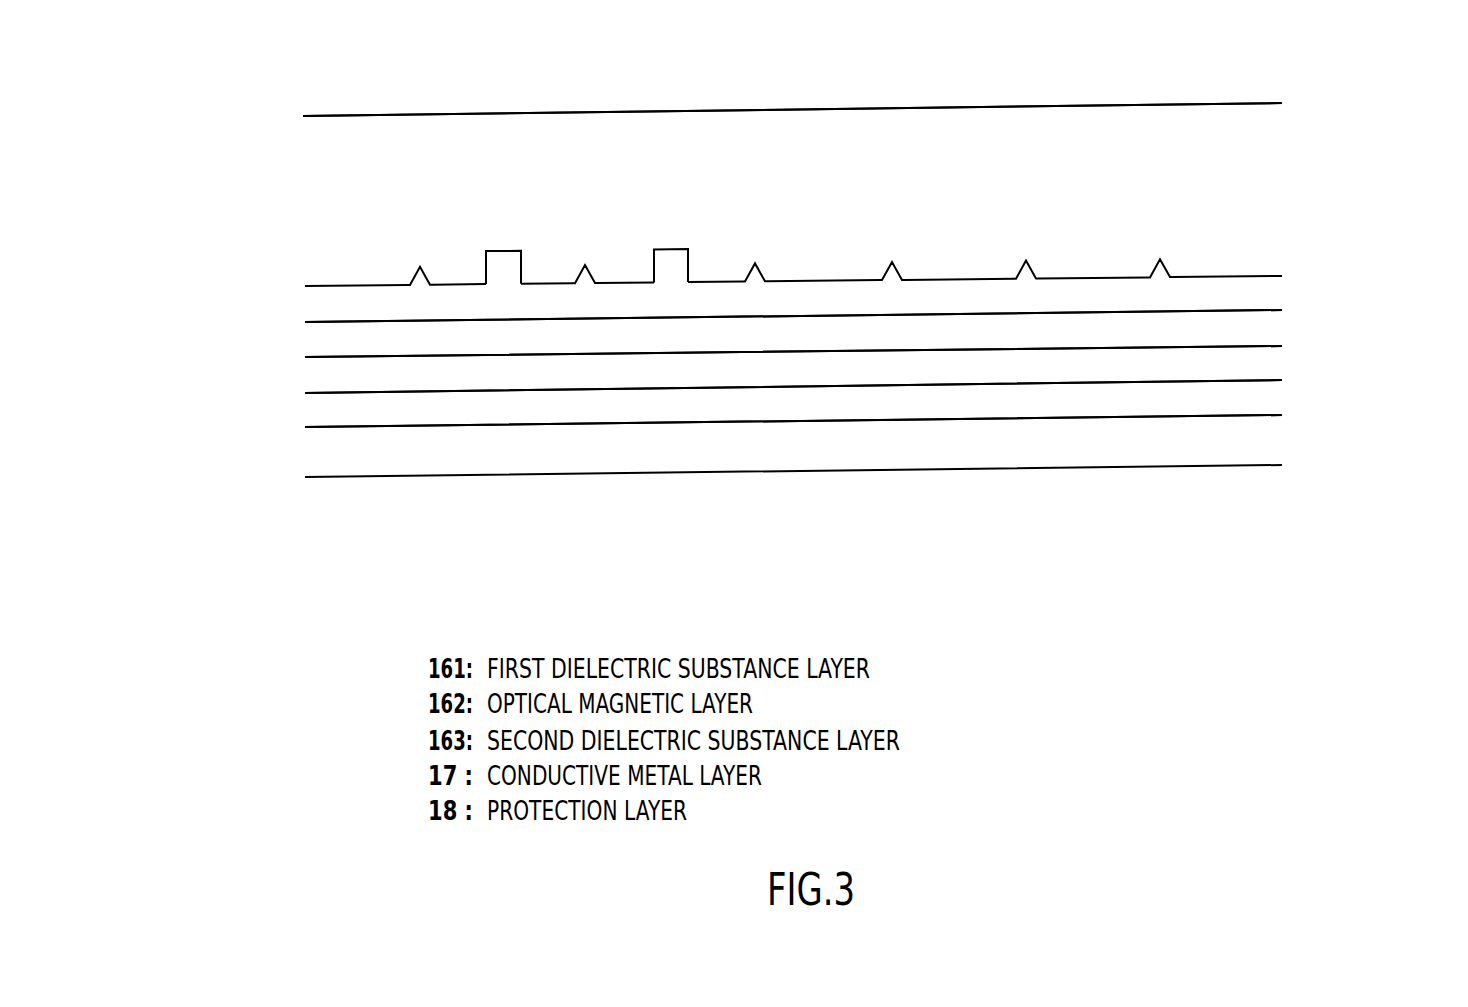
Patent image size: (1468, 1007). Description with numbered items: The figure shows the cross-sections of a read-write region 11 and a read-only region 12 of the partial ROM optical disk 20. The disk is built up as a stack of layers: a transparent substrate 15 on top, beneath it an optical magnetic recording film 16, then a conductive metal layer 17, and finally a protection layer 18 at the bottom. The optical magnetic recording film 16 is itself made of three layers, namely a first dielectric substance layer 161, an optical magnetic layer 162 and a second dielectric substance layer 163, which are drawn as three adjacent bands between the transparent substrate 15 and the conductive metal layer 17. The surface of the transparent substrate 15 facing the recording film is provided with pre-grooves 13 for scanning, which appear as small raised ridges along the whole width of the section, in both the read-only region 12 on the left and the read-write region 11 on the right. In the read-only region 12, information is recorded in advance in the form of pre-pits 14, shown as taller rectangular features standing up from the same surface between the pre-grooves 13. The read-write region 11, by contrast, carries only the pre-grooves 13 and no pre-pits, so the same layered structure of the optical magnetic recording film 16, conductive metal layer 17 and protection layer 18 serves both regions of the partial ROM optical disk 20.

The partial ROM optical disk 20 is at (766, 108).
The transparent substrate 15 is at (1240, 157).
The pre-grooves 13 is at (428, 282).
The pre-pits 14 is at (507, 250).
The optical magnetic recording film 16 is at (761, 409).
The first dielectric substance layer 161 is at (1273, 302).
The optical magnetic layer 162 is at (1273, 334).
The second dielectric substance layer 163 is at (1273, 366).
The conductive metal layer 17 is at (1273, 398).
The protection layer 18 is at (1275, 440).
The read-only region 12 is at (749, 506).
The read-write region 11 is at (1282, 499).